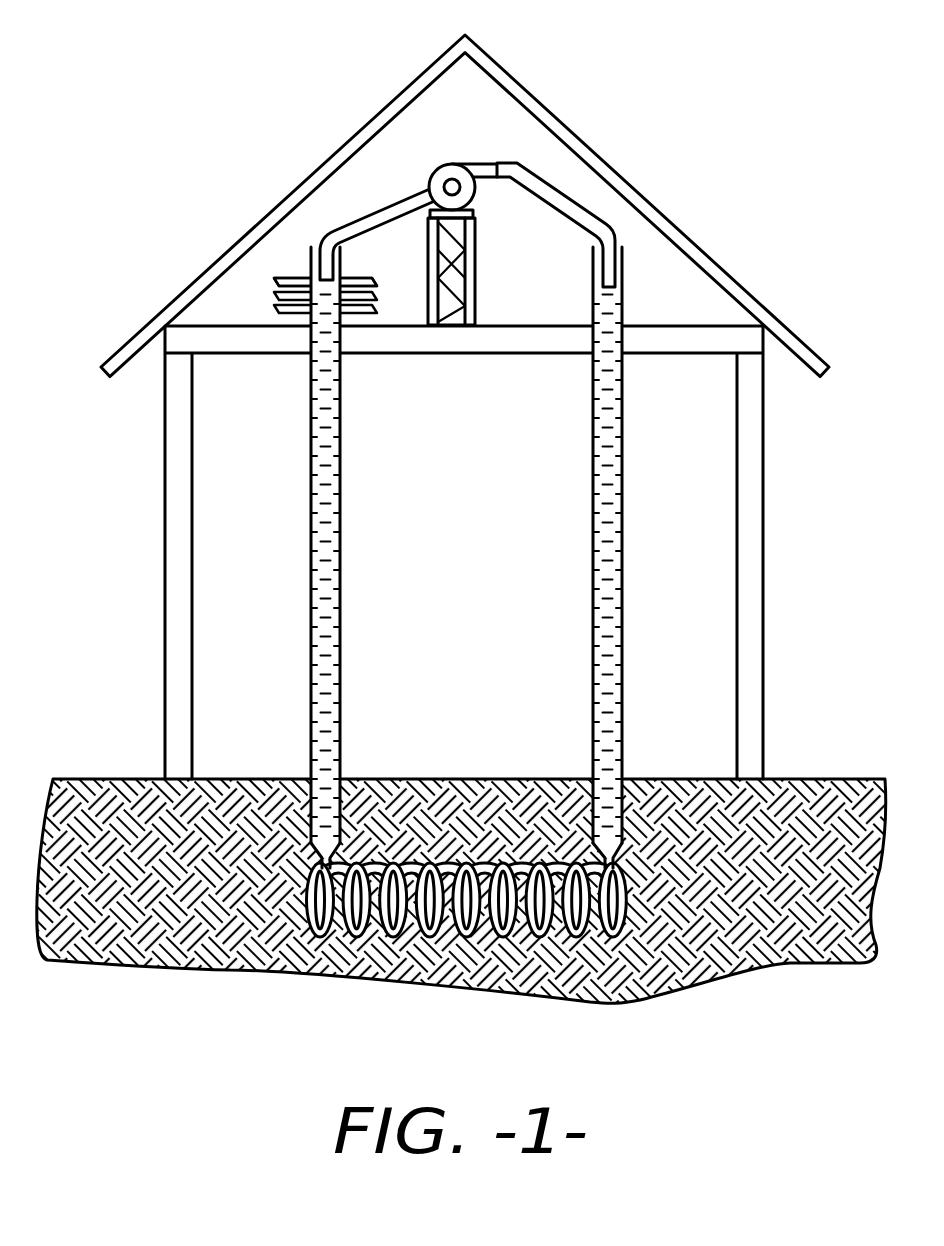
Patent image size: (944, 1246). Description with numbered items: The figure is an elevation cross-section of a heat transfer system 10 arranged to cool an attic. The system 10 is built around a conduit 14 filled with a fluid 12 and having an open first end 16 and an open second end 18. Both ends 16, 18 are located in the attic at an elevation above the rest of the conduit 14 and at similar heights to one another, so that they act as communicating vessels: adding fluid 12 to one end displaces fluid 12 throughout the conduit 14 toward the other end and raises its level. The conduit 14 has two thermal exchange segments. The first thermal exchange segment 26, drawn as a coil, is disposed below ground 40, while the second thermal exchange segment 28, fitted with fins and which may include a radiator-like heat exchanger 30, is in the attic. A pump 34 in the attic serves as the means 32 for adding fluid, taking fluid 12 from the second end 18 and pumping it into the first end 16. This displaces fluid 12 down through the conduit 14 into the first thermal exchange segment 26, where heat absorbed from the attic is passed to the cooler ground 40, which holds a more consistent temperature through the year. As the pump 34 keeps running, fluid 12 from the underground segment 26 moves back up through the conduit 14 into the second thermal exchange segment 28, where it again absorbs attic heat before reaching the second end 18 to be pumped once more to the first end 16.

The heat transfer system 10 is at (699, 85).
The fluid 12 is at (327, 385).
The conduit 14 is at (310, 723).
The first end 16 is at (618, 247).
The second end 18 is at (315, 250).
The first thermal exchange segment 26 is at (533, 937).
The second thermal exchange segment 28 is at (310, 323).
The heat exchanger 30 is at (273, 282).
The means for adding fluid 32 is at (443, 162).
The pump 34 is at (482, 163).
The ground 40 is at (793, 807).